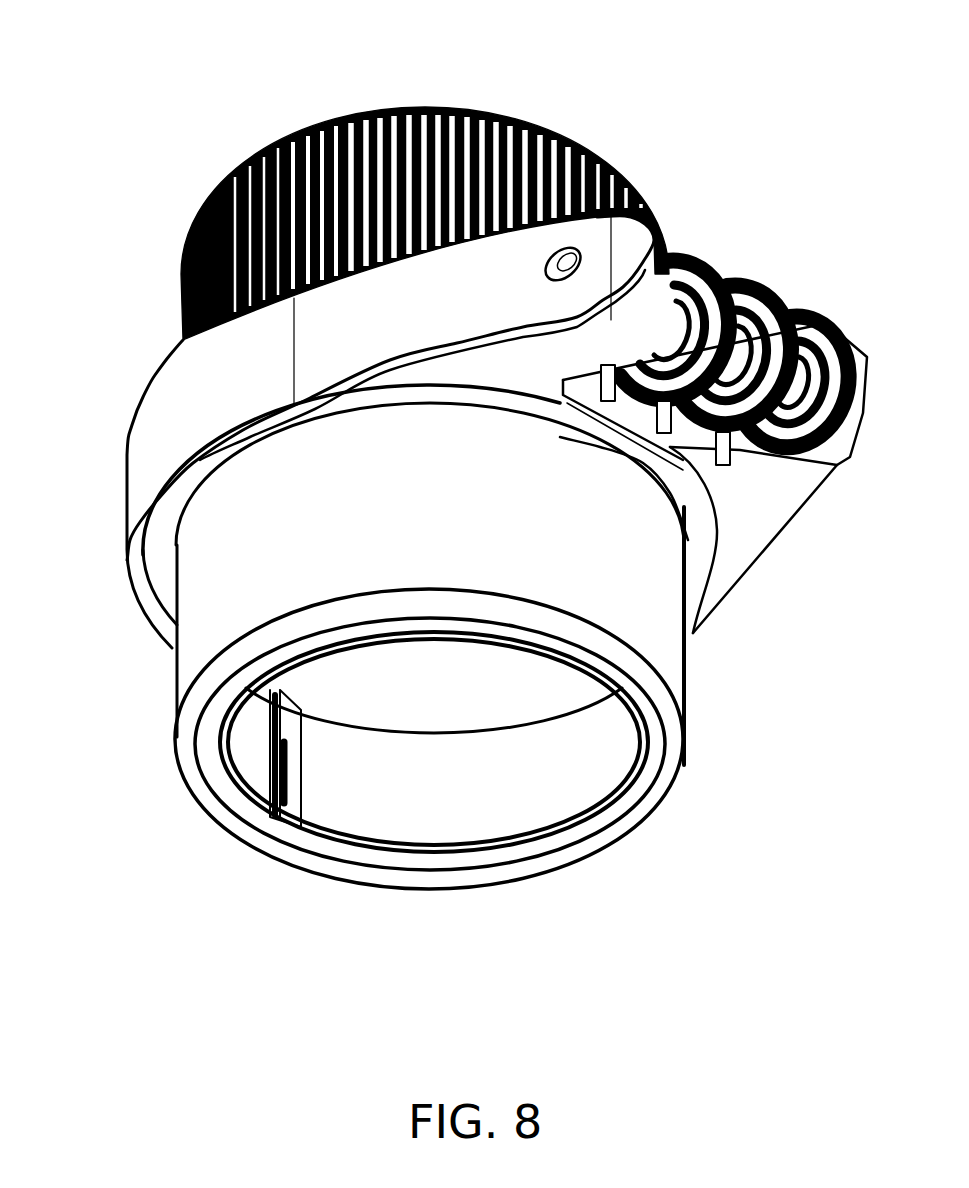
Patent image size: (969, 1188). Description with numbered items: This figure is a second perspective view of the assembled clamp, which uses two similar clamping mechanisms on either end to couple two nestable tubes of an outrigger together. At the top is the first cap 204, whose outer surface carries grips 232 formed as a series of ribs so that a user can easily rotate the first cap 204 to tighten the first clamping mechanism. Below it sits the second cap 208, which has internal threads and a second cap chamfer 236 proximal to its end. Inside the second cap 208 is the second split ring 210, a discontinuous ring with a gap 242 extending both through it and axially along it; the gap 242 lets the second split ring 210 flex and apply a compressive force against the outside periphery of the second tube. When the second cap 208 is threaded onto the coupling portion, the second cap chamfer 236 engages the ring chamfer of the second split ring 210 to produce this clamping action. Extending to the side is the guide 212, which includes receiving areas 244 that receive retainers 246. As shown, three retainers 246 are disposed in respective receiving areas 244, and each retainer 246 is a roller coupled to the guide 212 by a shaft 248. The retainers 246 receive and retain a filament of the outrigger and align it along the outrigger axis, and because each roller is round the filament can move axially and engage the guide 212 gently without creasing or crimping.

The first cap 204 is at (134, 174).
The grips 232 is at (484, 116).
The guide 212 is at (177, 403).
The shaft 248 is at (548, 272).
The retainer 246 is at (790, 323).
The receiving areas 244 is at (707, 447).
The second cap 208 is at (217, 610).
The second cap chamfer 236 is at (637, 783).
The second split ring 210 is at (403, 813).
The gap 242 is at (287, 805).